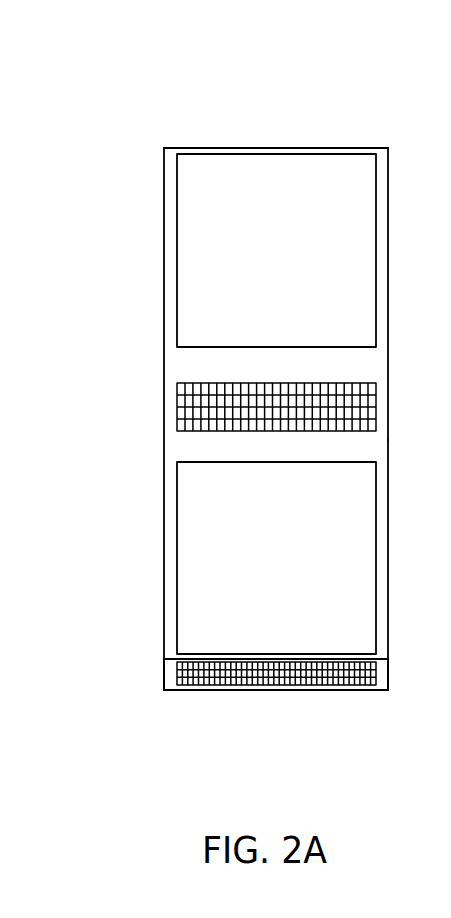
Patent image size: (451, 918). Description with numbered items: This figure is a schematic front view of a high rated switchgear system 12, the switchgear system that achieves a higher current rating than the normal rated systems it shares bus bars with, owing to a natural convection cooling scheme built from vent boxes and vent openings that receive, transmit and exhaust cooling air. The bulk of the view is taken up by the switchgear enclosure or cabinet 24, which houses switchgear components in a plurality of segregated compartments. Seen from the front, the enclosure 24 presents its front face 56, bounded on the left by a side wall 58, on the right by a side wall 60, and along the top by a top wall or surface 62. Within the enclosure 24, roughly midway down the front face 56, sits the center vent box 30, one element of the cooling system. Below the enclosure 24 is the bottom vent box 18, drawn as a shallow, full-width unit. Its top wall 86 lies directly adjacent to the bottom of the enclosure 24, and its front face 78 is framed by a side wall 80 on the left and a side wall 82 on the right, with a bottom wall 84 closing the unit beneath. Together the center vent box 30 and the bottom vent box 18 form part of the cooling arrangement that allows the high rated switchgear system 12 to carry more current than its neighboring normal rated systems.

The high rated switchgear system 12 is at (379, 103).
The switchgear enclosure 24 is at (125, 179).
The top wall 62 is at (296, 148).
The side wall 58 is at (164, 366).
The front face 56 is at (388, 370).
The side wall 60 is at (388, 470).
The top wall 86 is at (276, 658).
The side wall 80 is at (163, 668).
The front face 78 is at (385, 669).
The side wall 82 is at (388, 683).
The bottom wall 84 is at (287, 690).
The center vent box 30 is at (163, 675).
The bottom vent box 18 is at (195, 709).